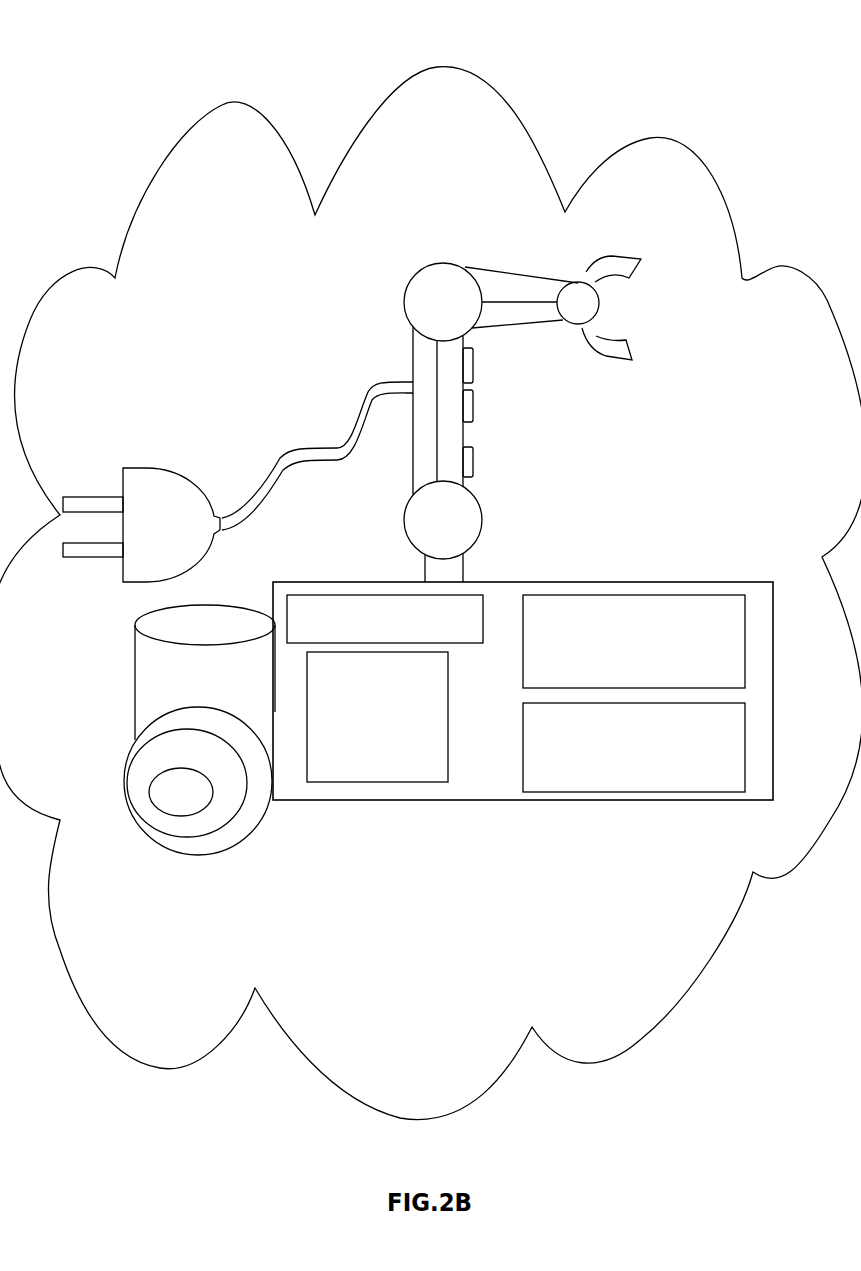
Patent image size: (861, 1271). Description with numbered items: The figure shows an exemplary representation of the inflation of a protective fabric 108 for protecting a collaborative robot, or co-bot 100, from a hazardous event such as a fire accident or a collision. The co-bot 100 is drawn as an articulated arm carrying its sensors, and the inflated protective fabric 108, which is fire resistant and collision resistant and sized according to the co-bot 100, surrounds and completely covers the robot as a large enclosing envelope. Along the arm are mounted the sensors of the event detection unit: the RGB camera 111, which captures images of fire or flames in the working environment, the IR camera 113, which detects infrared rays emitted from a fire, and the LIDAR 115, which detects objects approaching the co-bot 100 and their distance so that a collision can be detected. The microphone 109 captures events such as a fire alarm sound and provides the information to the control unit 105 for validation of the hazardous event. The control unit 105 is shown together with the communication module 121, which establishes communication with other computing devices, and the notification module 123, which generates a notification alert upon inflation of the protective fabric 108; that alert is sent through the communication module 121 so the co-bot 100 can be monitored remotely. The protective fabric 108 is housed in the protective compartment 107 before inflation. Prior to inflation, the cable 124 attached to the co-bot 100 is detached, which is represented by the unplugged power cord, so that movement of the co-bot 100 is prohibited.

The collaborative robot 100 is at (418, 536).
The control unit 105 is at (377, 717).
The protective compartment 107 is at (199, 730).
The protective fabric 108 is at (465, 70).
The microphone 109 is at (385, 619).
The RGB camera 111 is at (473, 363).
The IR camera 113 is at (473, 403).
The LIDAR 115 is at (473, 460).
The communication module 121 is at (634, 641).
The notification module 123 is at (634, 747).
The cable 124 is at (287, 460).